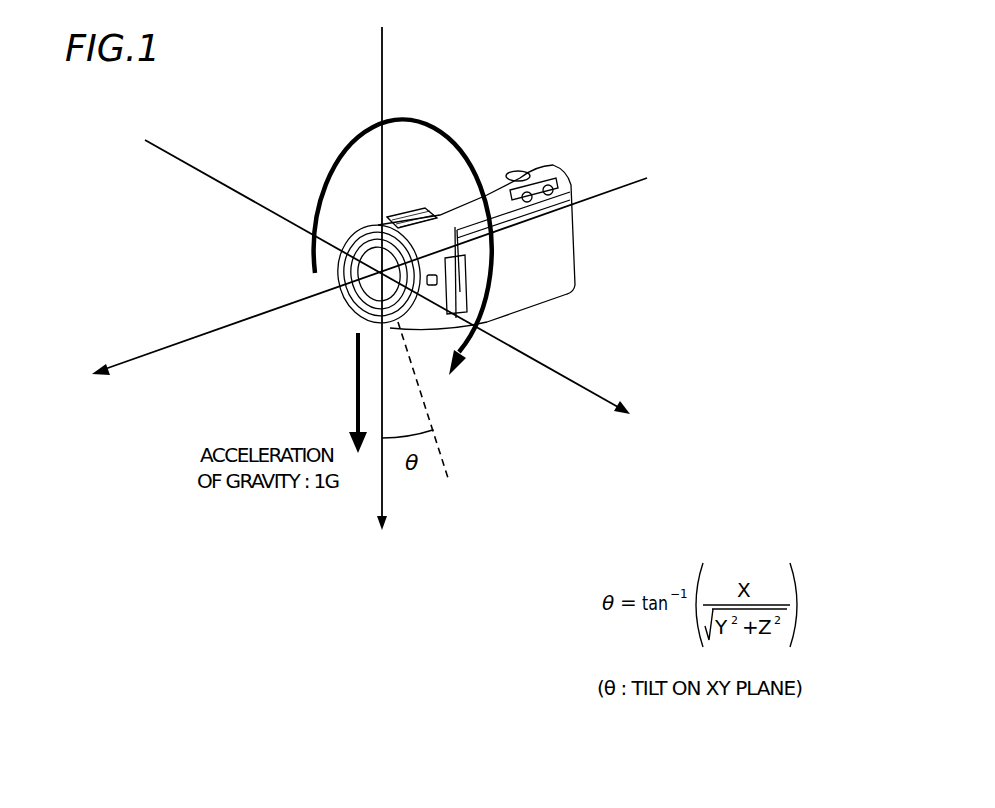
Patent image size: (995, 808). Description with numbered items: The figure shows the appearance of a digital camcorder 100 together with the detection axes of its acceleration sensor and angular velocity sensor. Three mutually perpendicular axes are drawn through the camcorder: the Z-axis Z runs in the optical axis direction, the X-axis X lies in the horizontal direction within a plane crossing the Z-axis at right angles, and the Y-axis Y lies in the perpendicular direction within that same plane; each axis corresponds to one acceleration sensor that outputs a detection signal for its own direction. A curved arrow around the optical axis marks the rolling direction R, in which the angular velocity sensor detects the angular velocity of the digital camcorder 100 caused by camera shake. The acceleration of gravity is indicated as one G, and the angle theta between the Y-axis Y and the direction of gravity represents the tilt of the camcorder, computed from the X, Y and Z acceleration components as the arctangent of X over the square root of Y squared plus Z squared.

The digital camcorder 100 is at (617, 245).
The X-axis X is at (450, 306).
The Y-axis Y is at (380, 308).
The Z-axis Z is at (334, 305).
The rolling direction R is at (479, 231).